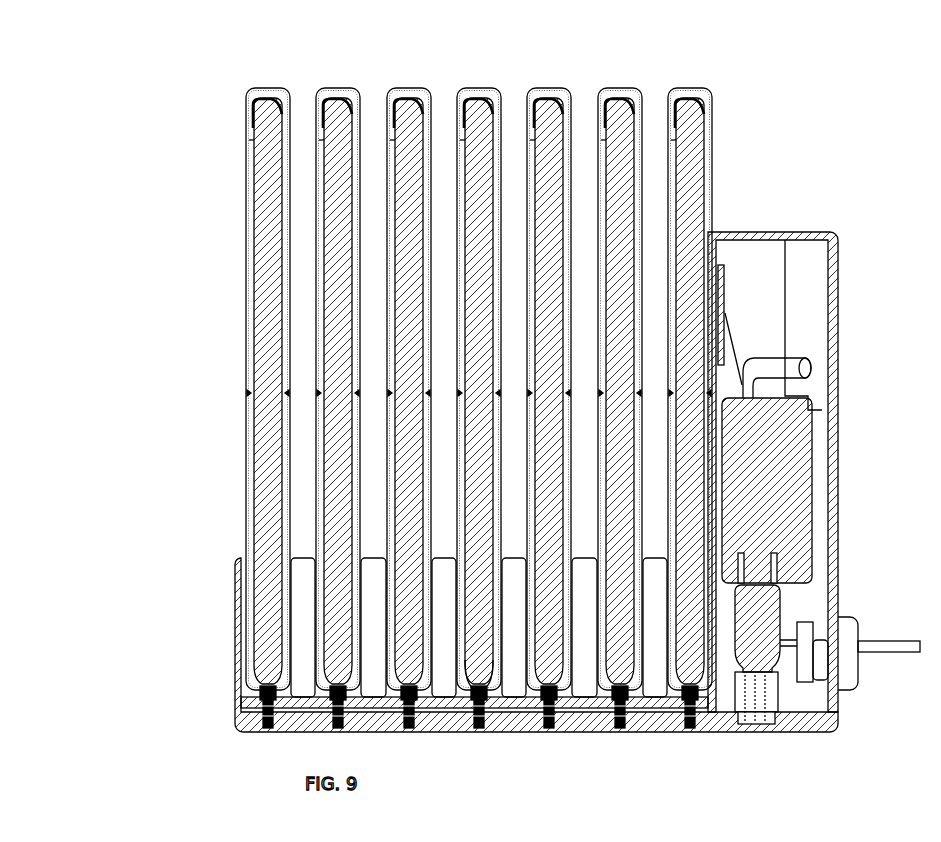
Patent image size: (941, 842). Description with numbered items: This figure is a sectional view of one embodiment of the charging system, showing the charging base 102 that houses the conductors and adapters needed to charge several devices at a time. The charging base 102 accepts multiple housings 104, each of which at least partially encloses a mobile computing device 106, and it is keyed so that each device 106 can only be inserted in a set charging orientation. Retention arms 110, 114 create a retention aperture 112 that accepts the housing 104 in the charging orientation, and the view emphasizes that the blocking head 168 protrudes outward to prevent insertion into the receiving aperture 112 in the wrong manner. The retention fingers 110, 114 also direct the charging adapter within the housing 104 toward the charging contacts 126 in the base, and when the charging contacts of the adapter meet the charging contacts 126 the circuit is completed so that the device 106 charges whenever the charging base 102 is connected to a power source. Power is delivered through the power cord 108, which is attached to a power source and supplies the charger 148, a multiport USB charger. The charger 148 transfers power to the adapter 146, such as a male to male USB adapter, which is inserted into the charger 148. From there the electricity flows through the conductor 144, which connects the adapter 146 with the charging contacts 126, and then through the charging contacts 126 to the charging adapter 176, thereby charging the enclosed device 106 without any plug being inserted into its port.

The charging base 102 is at (548, 399).
The housing 104 is at (468, 88).
The mobile computing device 106 is at (480, 173).
The blocking head 168 is at (498, 95).
The retention arm 114 is at (505, 590).
The retention arm 110 is at (443, 597).
The charging adapter 176 is at (478, 688).
The charging contacts 126 is at (482, 715).
The conductor 144 is at (507, 712).
The retention aperture 112 is at (483, 652).
The charger 148 is at (762, 448).
The adapter 146 is at (768, 612).
The power cord 108 is at (880, 645).